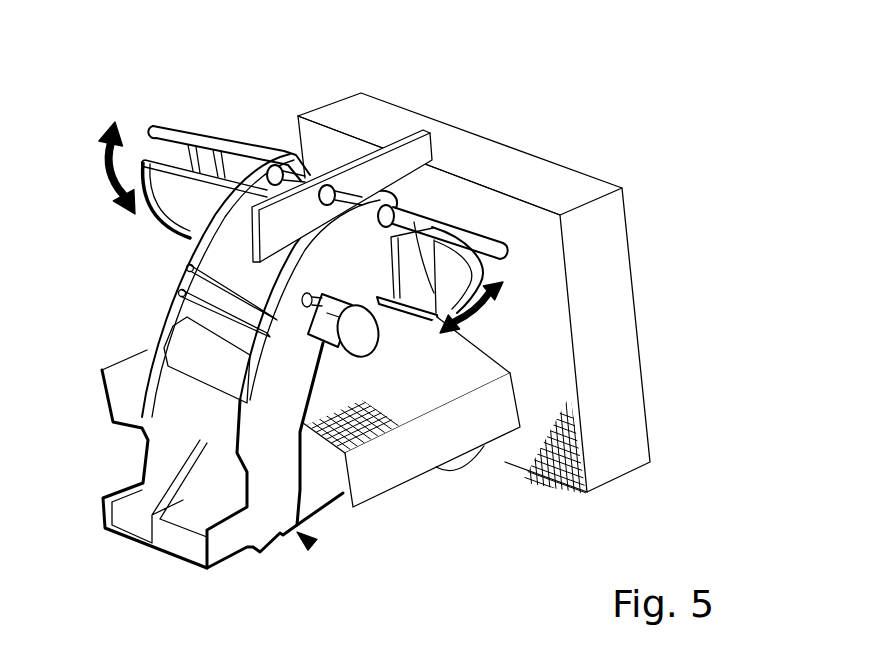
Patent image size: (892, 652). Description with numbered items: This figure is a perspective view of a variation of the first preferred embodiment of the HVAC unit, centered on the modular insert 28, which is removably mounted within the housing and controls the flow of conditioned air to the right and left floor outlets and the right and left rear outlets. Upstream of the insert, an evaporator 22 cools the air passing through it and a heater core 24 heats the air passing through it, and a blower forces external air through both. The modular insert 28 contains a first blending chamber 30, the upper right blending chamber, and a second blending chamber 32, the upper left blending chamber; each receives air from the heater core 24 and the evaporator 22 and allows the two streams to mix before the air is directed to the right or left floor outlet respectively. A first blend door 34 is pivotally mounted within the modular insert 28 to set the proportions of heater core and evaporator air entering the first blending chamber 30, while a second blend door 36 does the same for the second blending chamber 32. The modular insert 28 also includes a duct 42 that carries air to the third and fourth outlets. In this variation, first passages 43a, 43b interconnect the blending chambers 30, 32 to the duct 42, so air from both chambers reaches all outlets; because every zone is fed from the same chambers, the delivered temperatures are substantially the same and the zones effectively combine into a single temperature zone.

The evaporator 22 is at (597, 275).
The heater core 24 is at (405, 470).
The modular insert 28 is at (377, 598).
The first blending chamber 30 is at (390, 178).
The second blending chamber 32 is at (332, 157).
The first blend door 34 is at (452, 268).
The second blend door 36 is at (170, 197).
The duct 42 is at (203, 351).
The first passage 43a is at (296, 224).
The first passage 43b is at (186, 237).